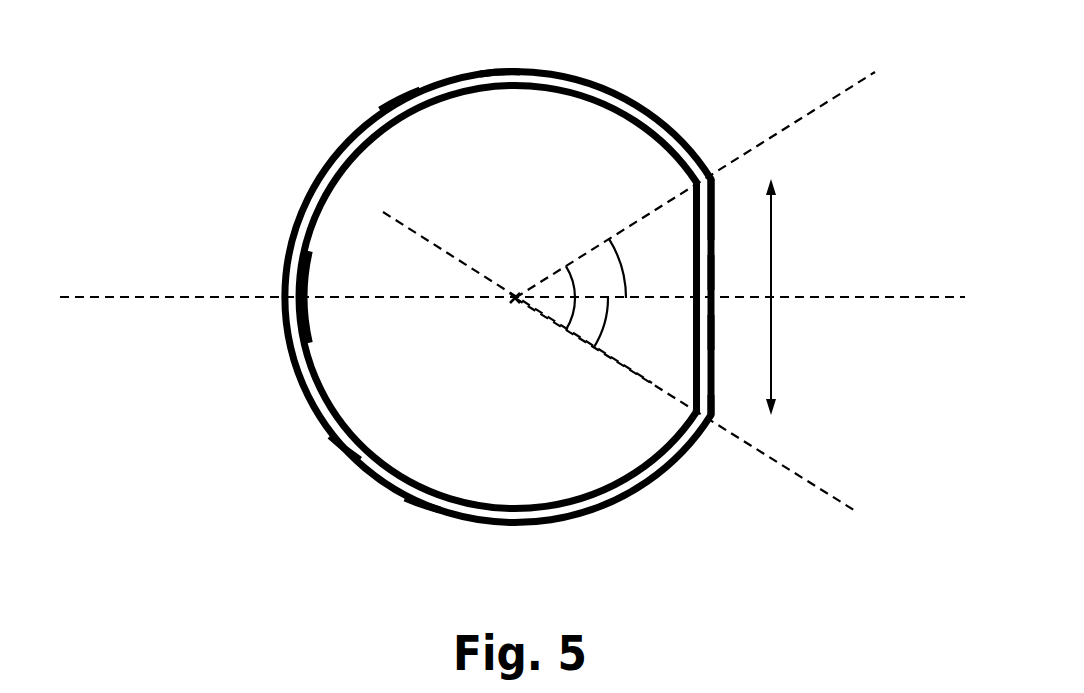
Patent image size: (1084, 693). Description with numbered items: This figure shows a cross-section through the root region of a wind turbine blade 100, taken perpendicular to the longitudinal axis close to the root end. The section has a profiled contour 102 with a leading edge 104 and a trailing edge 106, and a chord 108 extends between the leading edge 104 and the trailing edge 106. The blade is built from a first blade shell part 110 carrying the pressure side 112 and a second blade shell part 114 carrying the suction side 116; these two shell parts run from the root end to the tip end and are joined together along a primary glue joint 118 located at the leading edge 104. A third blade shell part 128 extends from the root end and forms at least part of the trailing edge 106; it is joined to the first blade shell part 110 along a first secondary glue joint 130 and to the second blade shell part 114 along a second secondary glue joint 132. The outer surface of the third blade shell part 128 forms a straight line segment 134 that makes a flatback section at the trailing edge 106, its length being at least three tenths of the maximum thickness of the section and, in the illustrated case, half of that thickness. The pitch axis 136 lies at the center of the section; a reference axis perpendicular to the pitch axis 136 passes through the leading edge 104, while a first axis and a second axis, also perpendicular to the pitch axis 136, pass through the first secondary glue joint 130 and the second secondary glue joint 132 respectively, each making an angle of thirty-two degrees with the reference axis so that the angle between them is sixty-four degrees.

The wind turbine blade 100 is at (688, 68).
The profiled contour 102 is at (650, 111).
The leading edge 104 is at (280, 297).
The trailing edge 106 is at (713, 218).
The chord 108 is at (344, 294).
The first blade shell part 110 is at (343, 455).
The pressure side 112 is at (420, 508).
The second blade shell part 114 is at (398, 101).
The suction side 116 is at (497, 71).
The primary glue joint 118 is at (280, 300).
The third blade shell part 128 is at (713, 332).
The first secondary glue joint 130 is at (710, 417).
The second secondary glue joint 132 is at (713, 181).
The straight line segment 134 is at (713, 272).
The pitch axis 136 is at (516, 295).